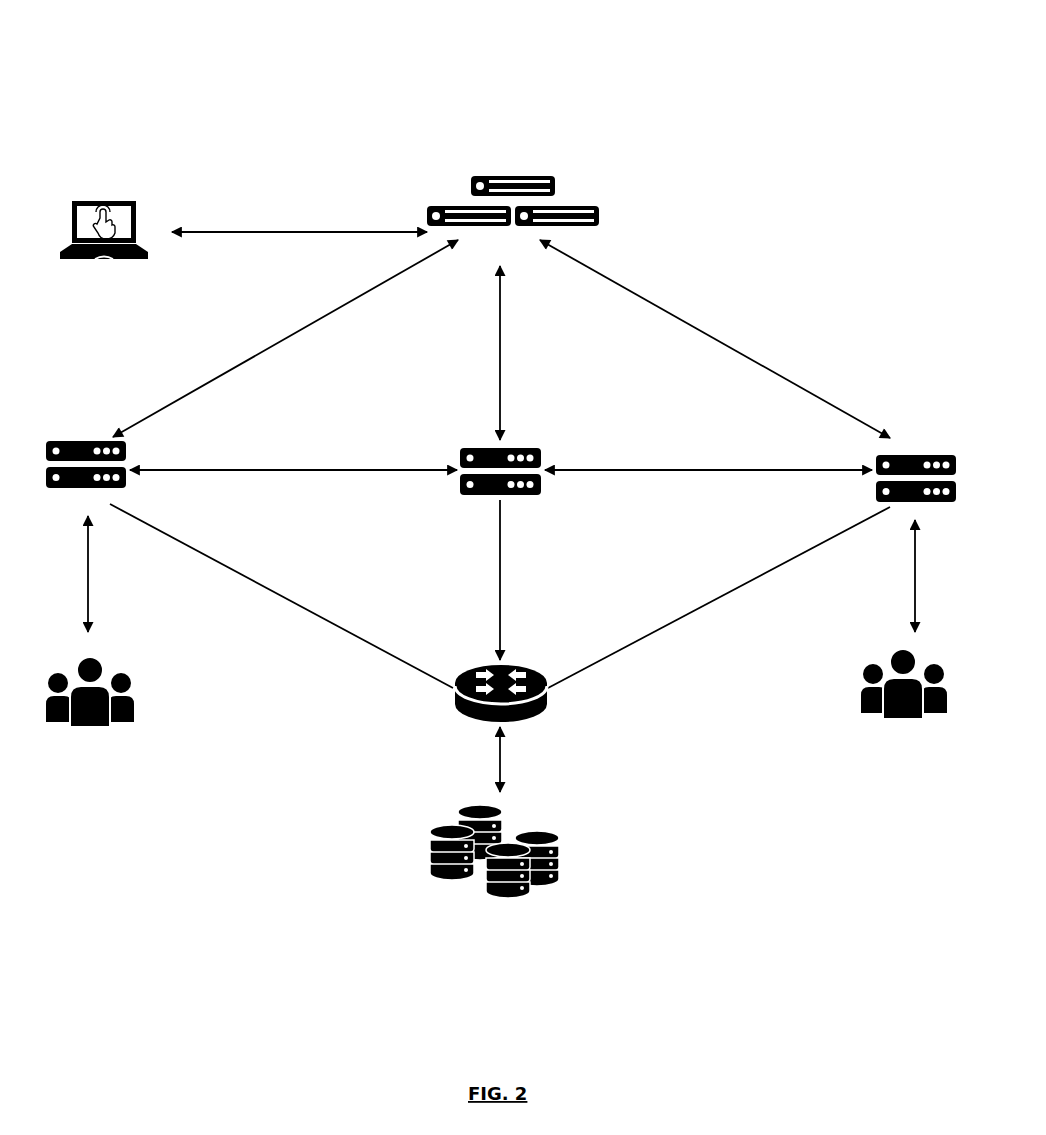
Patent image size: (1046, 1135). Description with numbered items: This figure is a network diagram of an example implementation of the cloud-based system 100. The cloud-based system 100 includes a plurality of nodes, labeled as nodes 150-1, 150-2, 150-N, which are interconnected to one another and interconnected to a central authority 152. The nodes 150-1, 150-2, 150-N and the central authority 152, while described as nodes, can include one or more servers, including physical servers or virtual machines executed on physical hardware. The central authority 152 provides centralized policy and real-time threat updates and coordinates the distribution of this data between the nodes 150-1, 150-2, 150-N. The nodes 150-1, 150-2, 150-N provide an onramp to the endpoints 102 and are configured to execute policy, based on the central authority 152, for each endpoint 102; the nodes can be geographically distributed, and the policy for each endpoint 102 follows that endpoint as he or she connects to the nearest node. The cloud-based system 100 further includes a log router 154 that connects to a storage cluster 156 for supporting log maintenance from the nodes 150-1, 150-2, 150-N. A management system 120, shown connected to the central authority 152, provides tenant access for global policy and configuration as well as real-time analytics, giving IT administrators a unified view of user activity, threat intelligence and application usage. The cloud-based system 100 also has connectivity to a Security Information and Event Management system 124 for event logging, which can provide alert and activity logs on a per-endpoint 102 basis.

The cloud-based system 100 is at (736, 60).
The management system 120 is at (116, 180).
The central authority 152 is at (527, 176).
The node 150-1 is at (78, 442).
The node 150-2 is at (522, 448).
The node 150-N is at (908, 455).
The endpoints 102 is at (128, 692).
The log router 154 is at (458, 710).
The Security Information and Event Management (SIEM) system 124 is at (562, 768).
The storage cluster 156 is at (428, 858).